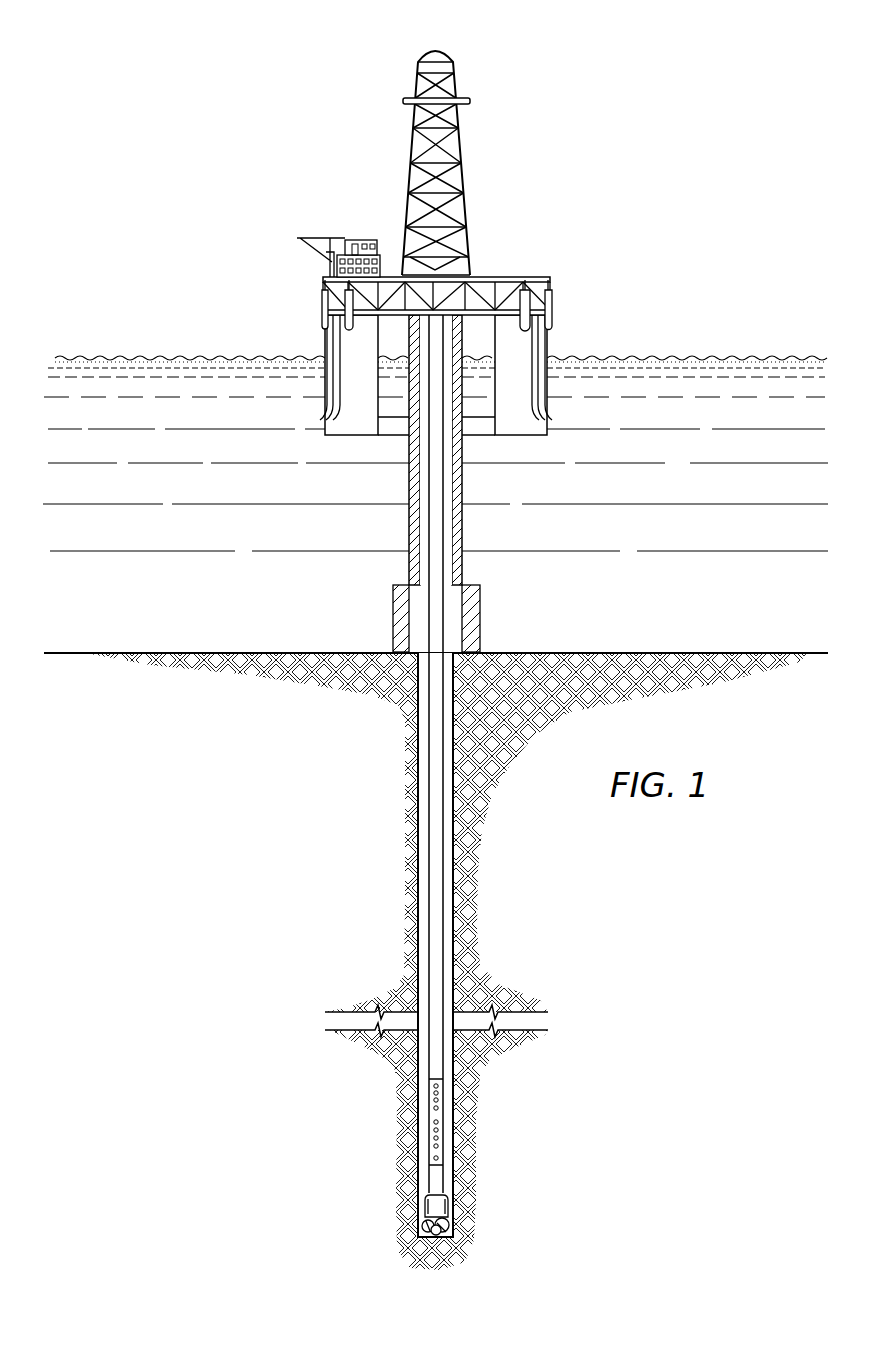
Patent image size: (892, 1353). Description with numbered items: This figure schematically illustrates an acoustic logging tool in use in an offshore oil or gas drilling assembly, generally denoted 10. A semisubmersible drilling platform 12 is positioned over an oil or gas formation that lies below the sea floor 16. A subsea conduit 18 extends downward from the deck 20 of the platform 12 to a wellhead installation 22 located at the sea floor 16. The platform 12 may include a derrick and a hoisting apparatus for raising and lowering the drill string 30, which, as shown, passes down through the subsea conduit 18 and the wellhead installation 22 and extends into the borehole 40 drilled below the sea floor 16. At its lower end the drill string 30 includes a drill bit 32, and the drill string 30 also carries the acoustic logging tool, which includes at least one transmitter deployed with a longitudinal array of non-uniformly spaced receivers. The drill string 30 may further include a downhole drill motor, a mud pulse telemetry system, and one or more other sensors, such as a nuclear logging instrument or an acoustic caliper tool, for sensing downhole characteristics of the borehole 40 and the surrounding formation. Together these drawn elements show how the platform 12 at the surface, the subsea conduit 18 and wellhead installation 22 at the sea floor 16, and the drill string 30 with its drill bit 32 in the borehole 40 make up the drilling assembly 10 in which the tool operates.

The offshore oil or gas drilling assembly 10 is at (533, 171).
The semisubmersible drilling platform 12 is at (538, 278).
The sea floor 16 is at (697, 652).
The subsea conduit 18 is at (462, 527).
The deck 20 is at (552, 309).
The wellhead installation 22 is at (464, 585).
The drill string 30 is at (437, 450).
The drill bit 32 is at (454, 1229).
The borehole 40 is at (417, 913).